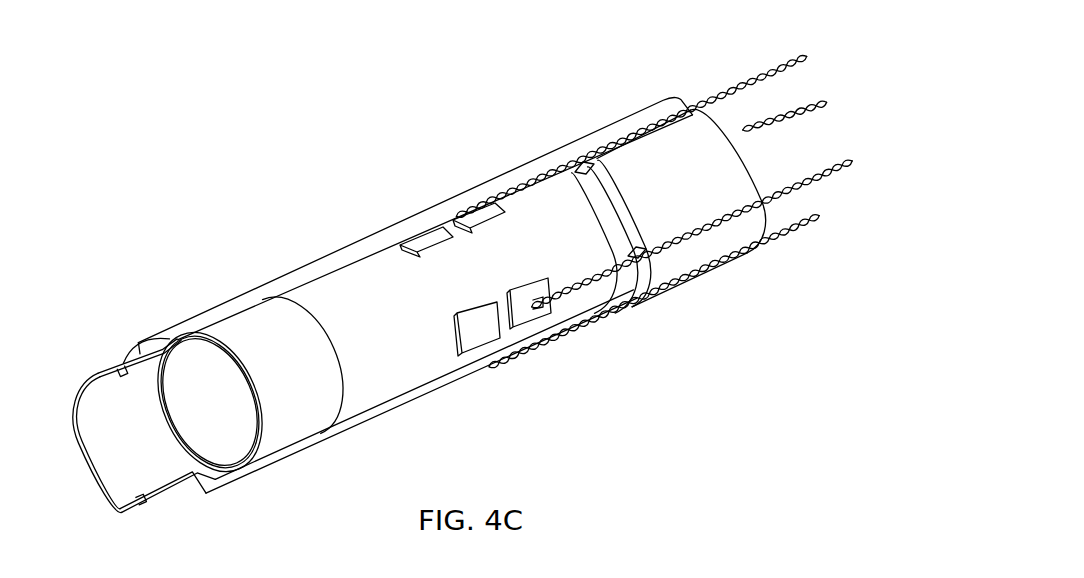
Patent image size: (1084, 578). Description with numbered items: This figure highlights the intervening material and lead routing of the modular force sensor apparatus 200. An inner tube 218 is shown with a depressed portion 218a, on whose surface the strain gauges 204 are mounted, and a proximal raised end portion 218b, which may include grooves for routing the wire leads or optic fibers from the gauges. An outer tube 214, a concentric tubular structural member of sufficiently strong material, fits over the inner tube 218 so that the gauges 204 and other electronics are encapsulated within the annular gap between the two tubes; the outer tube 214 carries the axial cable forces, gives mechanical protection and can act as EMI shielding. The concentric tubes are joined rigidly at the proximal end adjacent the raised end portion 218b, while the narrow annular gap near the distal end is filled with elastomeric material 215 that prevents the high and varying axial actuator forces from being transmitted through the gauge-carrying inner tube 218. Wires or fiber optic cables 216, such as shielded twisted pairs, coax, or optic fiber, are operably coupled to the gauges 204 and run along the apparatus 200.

The modular force sensor apparatus 200 is at (461, 283).
The strain gauges 204 is at (527, 313).
The outer tube 214 is at (316, 266).
The elastomeric material 215 is at (258, 316).
The wires or fiber optic cables 216 is at (737, 90).
The inner tube 218 is at (200, 336).
The depressed portion 218a is at (397, 383).
The proximal raised end portion 218b is at (680, 273).